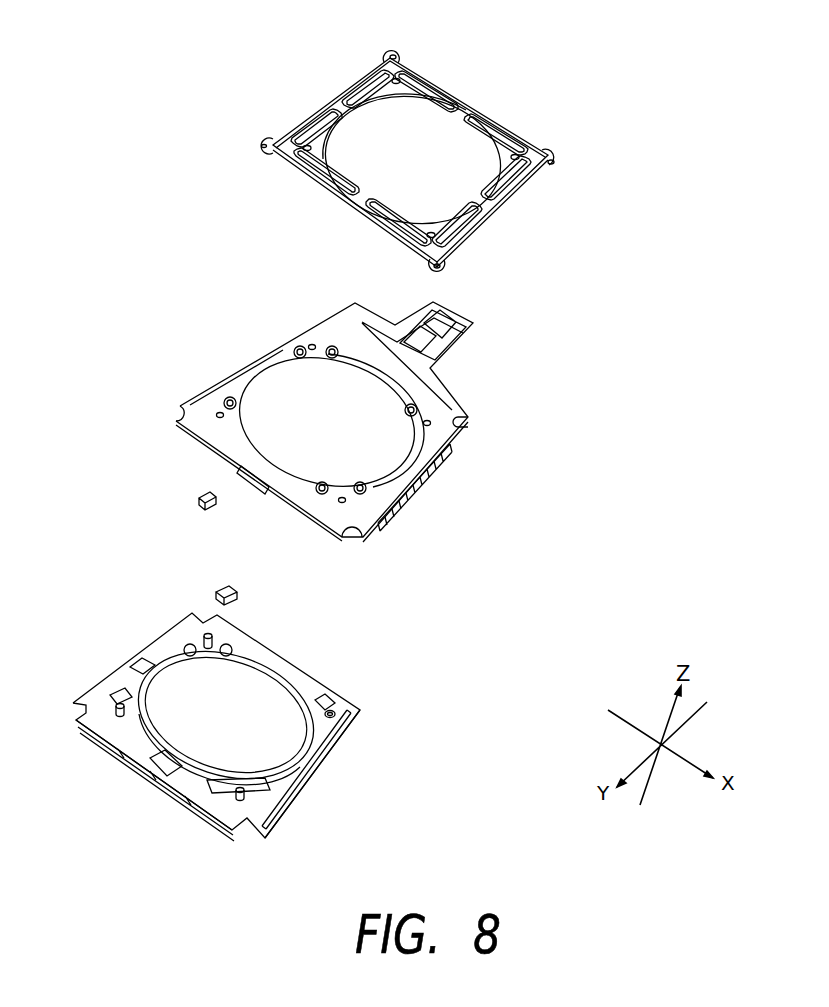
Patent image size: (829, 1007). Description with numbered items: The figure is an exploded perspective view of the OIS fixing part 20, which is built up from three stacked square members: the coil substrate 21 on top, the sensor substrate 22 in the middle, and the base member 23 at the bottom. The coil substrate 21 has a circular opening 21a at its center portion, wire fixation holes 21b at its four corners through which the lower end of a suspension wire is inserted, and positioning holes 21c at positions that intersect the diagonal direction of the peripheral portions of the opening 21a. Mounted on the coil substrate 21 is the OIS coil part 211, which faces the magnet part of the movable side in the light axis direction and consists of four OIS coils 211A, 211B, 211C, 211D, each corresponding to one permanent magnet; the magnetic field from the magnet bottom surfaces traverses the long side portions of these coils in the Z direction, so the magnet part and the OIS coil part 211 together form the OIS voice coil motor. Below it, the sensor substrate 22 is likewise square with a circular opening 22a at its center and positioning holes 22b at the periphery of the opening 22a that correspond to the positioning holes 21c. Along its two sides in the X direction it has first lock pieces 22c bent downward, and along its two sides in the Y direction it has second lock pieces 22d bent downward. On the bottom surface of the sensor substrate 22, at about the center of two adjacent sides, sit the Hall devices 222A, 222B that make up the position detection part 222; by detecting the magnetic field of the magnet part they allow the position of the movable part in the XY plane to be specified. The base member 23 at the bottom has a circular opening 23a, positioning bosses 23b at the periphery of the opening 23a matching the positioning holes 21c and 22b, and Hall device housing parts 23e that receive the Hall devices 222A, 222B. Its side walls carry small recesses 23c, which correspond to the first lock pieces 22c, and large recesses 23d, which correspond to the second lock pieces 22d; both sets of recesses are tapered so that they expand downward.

The OIS fixing part 20 is at (157, 305).
The coil substrate 21 is at (425, 155).
The opening 21a is at (447, 130).
The wire fixation holes 21b is at (258, 147).
The positioning holes 21c is at (520, 158).
The OIS coil part 211 is at (425, 143).
The OIS coil 211A is at (343, 203).
The OIS coil 211B is at (517, 193).
The OIS coil 211C is at (430, 73).
The OIS coil 211D is at (313, 110).
The sensor substrate 22 is at (355, 422).
The opening 22a is at (385, 405).
The positioning holes 22b is at (431, 424).
The first lock pieces 22c is at (241, 469).
The second lock pieces 22d is at (432, 481).
The position detection part 222 is at (140, 549).
The Hall device 222A is at (205, 502).
The Hall device 222B is at (213, 597).
The base member 23 is at (253, 739).
The opening 23a is at (282, 688).
The positioning bosses 23b is at (333, 713).
The small recesses 23c is at (155, 780).
The large recesses 23d is at (333, 770).
The Hall device housing parts 23e is at (140, 667).